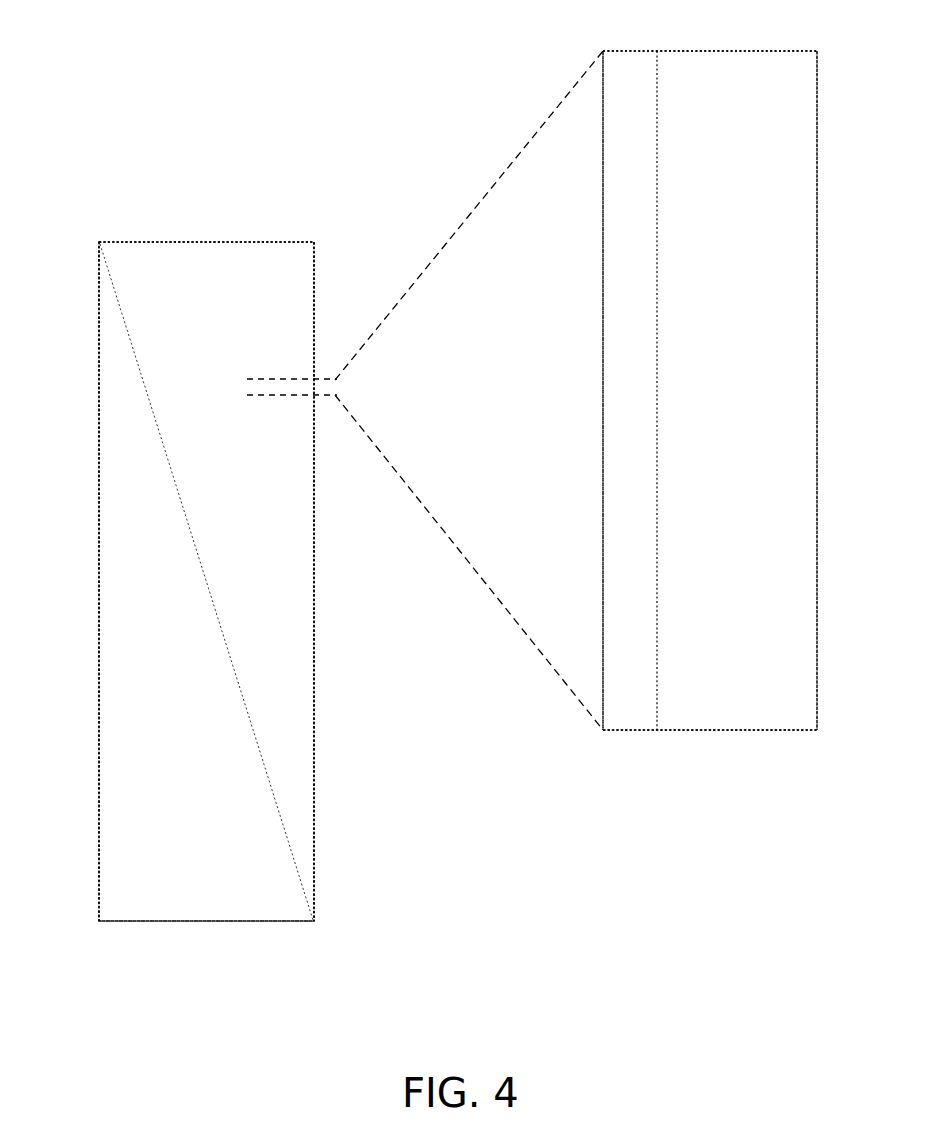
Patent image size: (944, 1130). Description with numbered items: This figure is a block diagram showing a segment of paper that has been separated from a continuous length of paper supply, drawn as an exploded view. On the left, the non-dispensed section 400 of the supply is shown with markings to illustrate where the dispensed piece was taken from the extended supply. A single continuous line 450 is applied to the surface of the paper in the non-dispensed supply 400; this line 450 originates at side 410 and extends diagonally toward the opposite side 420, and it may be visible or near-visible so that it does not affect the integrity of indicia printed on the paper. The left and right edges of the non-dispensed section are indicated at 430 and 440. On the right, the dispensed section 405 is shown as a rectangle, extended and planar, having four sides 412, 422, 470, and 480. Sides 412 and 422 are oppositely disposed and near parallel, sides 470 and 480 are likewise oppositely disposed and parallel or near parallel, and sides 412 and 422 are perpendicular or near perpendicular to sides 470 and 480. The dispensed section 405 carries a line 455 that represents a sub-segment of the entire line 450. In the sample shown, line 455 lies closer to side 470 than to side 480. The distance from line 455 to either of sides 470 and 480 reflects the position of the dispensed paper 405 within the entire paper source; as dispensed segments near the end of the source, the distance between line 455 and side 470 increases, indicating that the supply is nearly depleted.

The non-dispensed section 400 is at (88, 238).
The side 410 is at (162, 242).
The left side of display assembly 430 is at (99, 323).
The right side of display assembly 440 is at (314, 327).
The line 450 is at (148, 400).
The side 420 is at (153, 924).
The dispensed section 405 is at (601, 50).
The side 412 is at (717, 50).
The side 470 is at (603, 160).
The side 480 is at (817, 160).
The line 455 is at (657, 242).
The side 422 is at (657, 733).